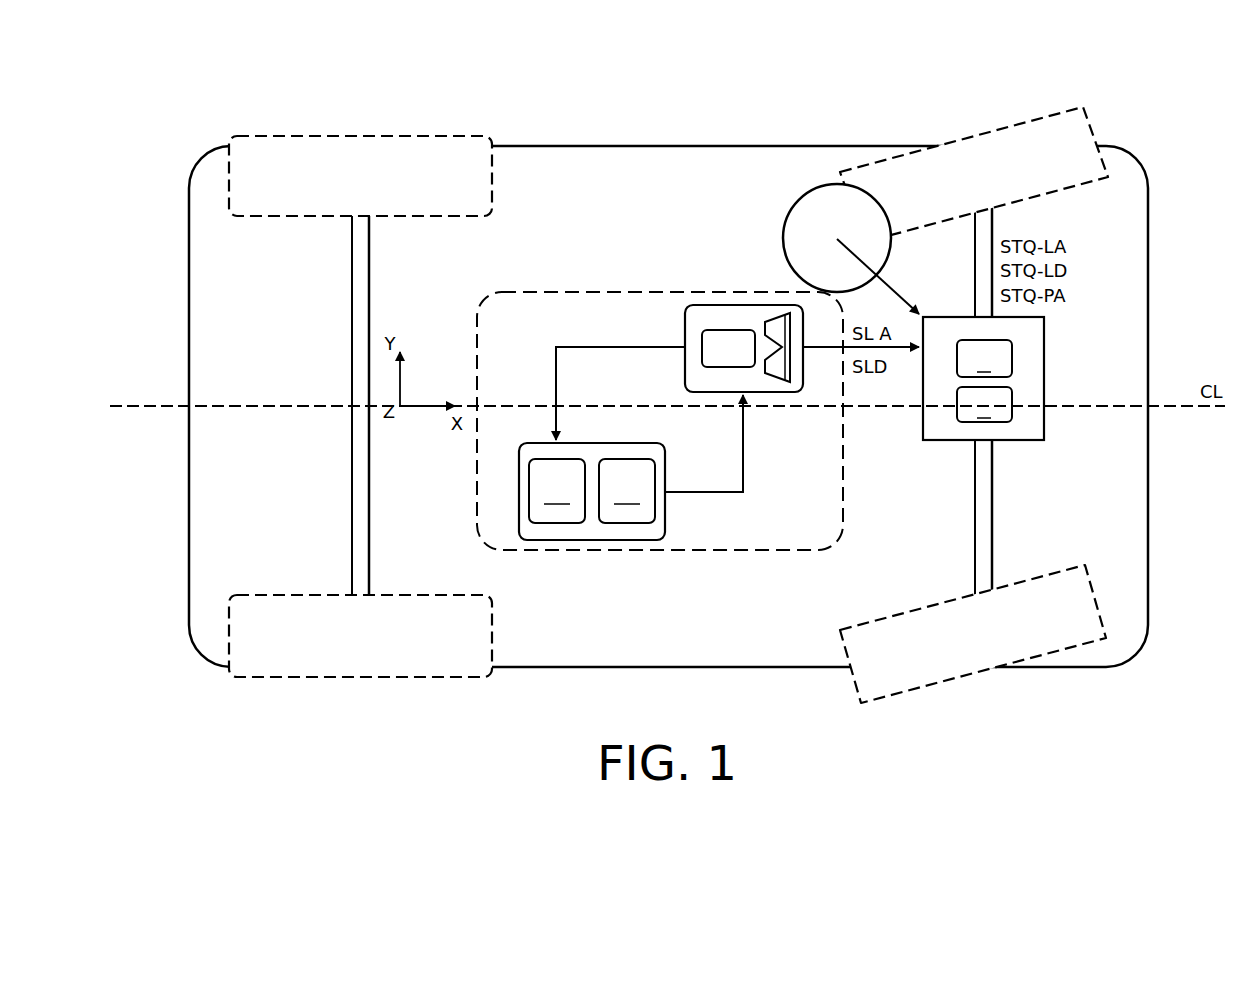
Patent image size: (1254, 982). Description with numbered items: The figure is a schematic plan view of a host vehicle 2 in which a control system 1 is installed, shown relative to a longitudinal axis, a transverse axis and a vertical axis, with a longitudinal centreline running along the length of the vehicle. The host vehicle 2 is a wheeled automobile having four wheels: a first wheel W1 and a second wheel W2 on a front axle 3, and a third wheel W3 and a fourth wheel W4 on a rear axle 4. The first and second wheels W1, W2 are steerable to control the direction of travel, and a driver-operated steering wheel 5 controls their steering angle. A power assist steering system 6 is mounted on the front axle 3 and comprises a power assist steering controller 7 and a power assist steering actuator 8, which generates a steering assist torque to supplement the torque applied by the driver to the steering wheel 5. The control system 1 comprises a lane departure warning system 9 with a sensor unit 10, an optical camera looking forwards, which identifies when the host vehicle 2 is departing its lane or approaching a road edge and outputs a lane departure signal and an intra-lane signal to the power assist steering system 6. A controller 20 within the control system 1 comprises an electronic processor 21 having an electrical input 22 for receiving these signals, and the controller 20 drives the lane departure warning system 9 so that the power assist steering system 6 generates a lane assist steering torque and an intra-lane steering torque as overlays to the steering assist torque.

The control system 1 is at (585, 557).
The host vehicle 2 is at (458, 108).
The front axle 3 is at (996, 487).
The rear axle 4 is at (349, 316).
The steering wheel 5 is at (785, 209).
The power assist steering system 6 is at (1014, 378).
The power assist steering controller 7 is at (984, 358).
The power assist steering actuator 8 is at (984, 404).
The lane departure warning system 9 is at (705, 324).
The sensor unit 10 is at (769, 316).
The controller 20 is at (631, 492).
The electronic processor 21 is at (557, 491).
The electrical input 22 is at (670, 515).
The first wheel W1 is at (997, 124).
The second wheel W2 is at (965, 684).
The third wheel W3 is at (300, 131).
The fourth wheel W4 is at (296, 680).